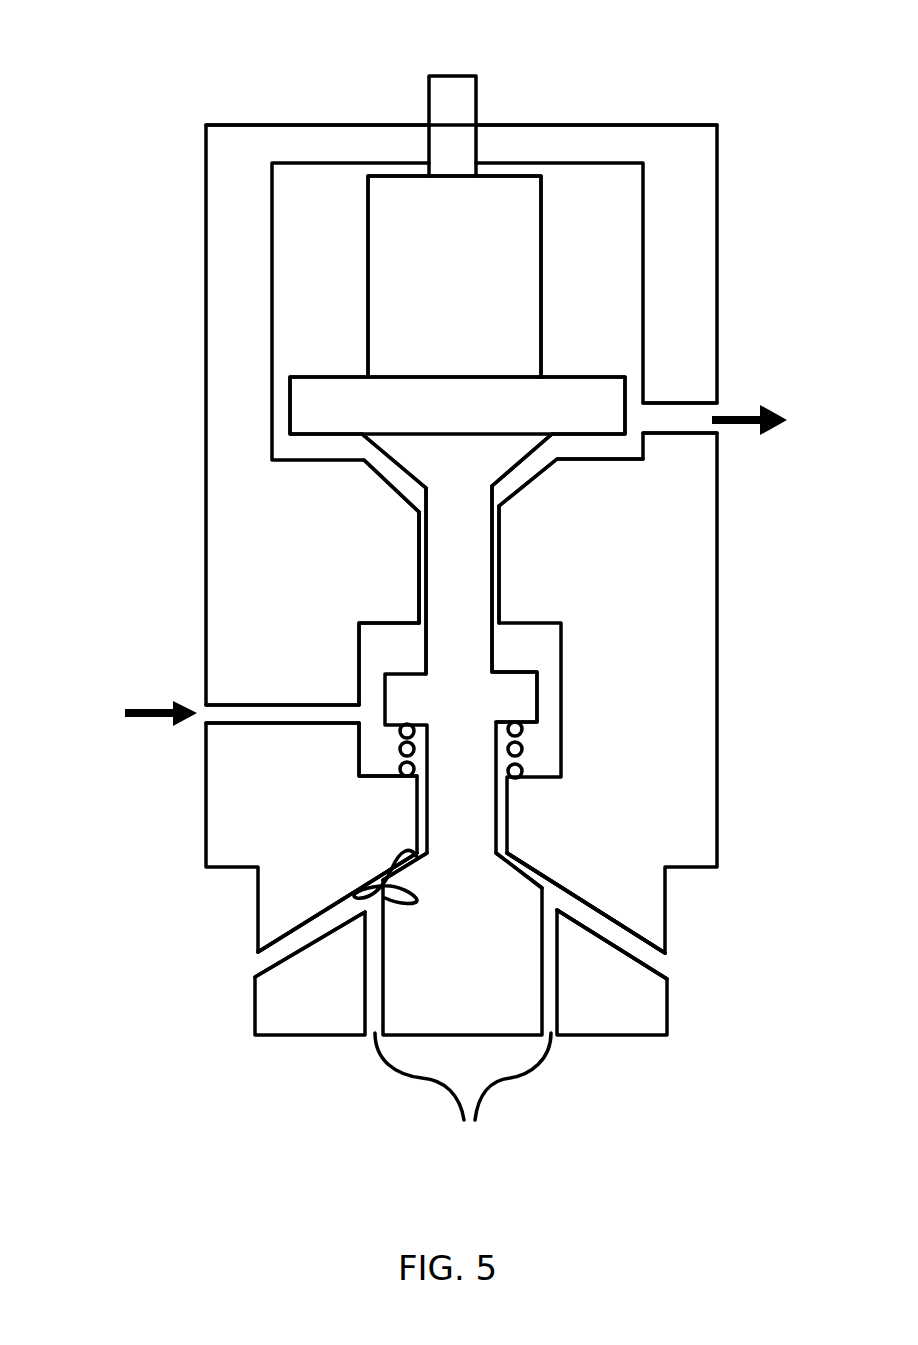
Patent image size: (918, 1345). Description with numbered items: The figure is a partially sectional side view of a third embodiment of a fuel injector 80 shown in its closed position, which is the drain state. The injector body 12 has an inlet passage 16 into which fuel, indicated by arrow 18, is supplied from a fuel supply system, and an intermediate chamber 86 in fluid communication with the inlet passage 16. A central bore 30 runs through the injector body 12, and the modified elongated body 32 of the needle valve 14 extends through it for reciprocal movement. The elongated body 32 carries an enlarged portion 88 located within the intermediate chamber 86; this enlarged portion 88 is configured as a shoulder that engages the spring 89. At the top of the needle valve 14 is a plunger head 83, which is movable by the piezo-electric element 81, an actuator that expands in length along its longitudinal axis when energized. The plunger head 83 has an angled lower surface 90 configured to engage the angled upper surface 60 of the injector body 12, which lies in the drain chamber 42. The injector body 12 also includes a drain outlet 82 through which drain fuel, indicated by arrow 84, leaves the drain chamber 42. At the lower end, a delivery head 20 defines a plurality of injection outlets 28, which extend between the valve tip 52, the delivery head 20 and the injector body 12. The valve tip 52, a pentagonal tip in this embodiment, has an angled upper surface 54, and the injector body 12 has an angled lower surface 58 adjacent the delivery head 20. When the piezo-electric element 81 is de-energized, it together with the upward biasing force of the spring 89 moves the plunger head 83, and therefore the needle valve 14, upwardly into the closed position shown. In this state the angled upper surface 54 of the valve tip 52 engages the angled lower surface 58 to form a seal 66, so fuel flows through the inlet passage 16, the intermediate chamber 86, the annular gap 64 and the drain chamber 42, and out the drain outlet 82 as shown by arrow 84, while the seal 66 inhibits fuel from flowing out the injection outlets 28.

The injector body 12 is at (188, 507).
The needle valve 14 is at (480, 527).
The inlet passage 16 is at (203, 712).
The fuel (arrow) 18 is at (150, 717).
The delivery head 20 is at (270, 1025).
The injection outlets 28 is at (260, 963).
The central bore 30 is at (500, 557).
The elongated body 32 is at (450, 582).
The drain chamber 42 is at (593, 447).
The valve tip 52 is at (520, 943).
The angled upper surface 54 is at (305, 818).
The angled lower surface 58 is at (345, 852).
The angled upper surface 60 is at (386, 476).
The annular gap 64 is at (415, 598).
The seal 66 is at (521, 870).
The fuel injector 80 is at (742, 132).
The piezo-electric element 81 is at (382, 265).
The drain outlet 82 is at (675, 418).
The plunger head 83 is at (331, 405).
The drain fuel (arrow) 84 is at (760, 427).
The intermediate chamber 86 is at (373, 661).
The enlarged portion 88 is at (527, 688).
The spring 89 is at (522, 770).
The angled lower surface 90 is at (513, 462).